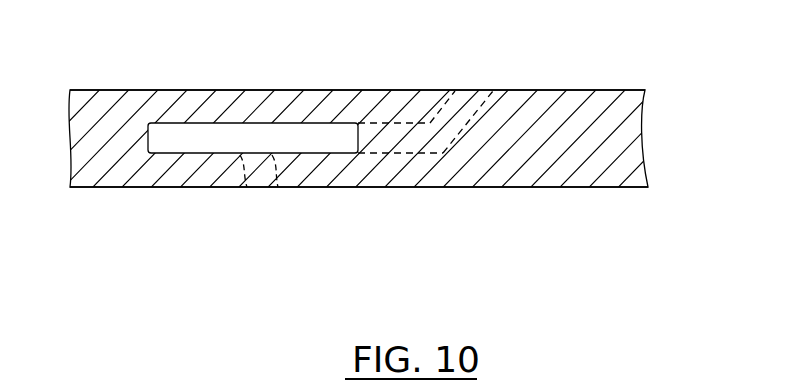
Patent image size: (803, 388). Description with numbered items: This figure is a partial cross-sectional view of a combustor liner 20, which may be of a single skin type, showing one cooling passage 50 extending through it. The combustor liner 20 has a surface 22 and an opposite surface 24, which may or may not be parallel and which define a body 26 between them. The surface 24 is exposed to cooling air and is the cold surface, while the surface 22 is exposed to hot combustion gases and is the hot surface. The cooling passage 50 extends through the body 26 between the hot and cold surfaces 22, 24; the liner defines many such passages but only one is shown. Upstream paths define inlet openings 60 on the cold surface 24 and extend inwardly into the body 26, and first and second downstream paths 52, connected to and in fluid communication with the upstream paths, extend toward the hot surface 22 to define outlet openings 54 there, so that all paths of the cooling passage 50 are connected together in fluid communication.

The combustor liner 20 is at (367, 149).
The surface 22 is at (566, 90).
The surface 24 is at (574, 188).
The body 26 is at (518, 174).
The cooling passage 50 is at (270, 122).
The downstream paths 52 is at (409, 115).
The outlet openings 54 is at (454, 140).
The inlet openings 60 is at (256, 188).